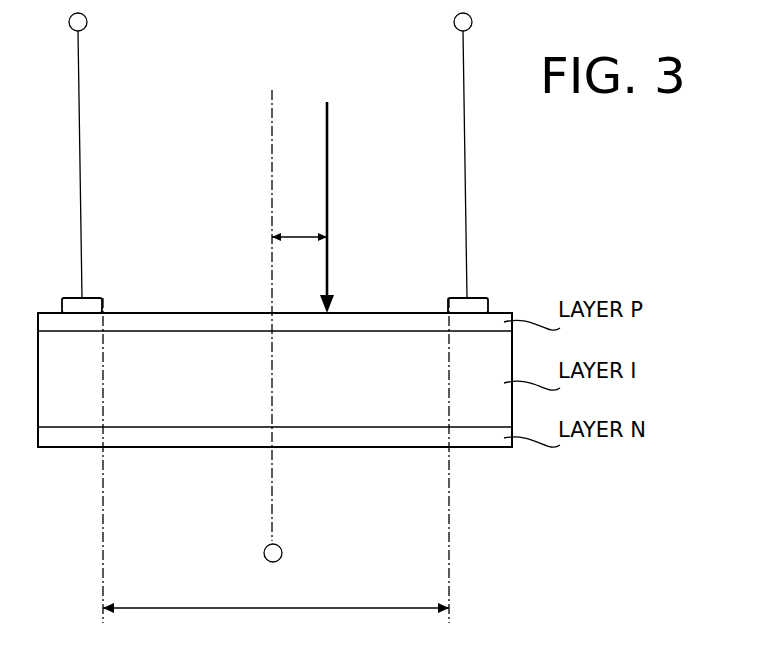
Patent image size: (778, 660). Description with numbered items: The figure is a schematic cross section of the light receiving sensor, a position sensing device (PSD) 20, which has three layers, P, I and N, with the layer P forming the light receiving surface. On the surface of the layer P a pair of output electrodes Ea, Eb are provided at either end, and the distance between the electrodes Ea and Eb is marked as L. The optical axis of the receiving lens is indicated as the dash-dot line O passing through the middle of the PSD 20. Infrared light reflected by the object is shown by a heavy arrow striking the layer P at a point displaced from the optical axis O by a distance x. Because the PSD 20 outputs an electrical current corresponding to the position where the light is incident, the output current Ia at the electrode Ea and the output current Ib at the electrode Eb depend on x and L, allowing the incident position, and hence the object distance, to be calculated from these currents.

The light receiving sensor (PSD) 20 is at (179, 285).
The output electrode Ea is at (66, 302).
The output electrode Eb is at (480, 298).
The output current at electrode Ea Ia is at (68, 155).
The output current at electrode Eb Ib is at (475, 155).
The optical axis O is at (272, 112).
The distance from the optical axis x is at (303, 207).
The distance between the electrodes L is at (276, 460).